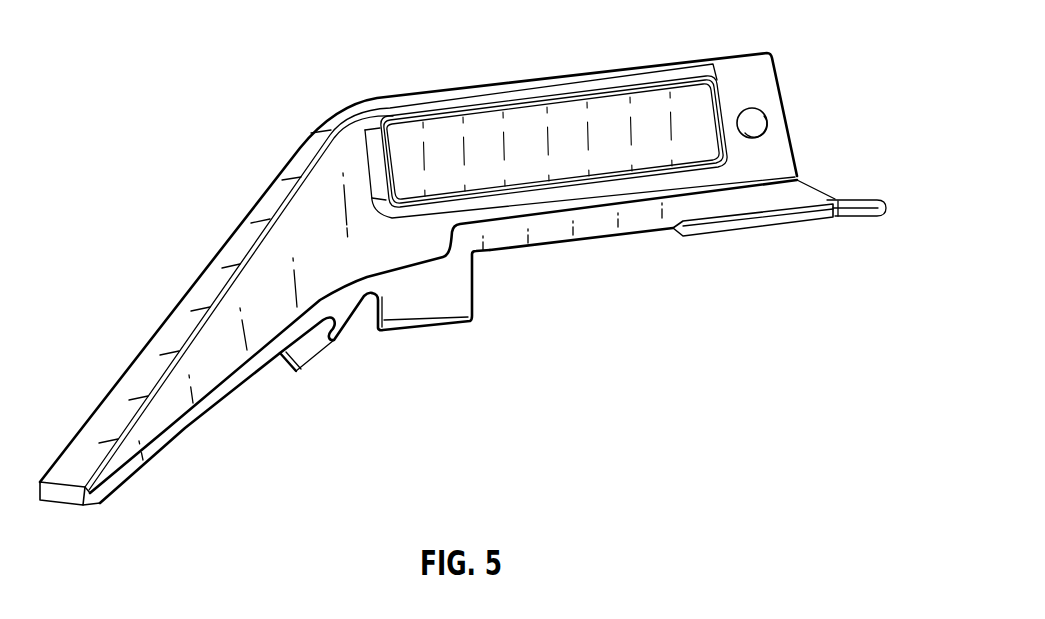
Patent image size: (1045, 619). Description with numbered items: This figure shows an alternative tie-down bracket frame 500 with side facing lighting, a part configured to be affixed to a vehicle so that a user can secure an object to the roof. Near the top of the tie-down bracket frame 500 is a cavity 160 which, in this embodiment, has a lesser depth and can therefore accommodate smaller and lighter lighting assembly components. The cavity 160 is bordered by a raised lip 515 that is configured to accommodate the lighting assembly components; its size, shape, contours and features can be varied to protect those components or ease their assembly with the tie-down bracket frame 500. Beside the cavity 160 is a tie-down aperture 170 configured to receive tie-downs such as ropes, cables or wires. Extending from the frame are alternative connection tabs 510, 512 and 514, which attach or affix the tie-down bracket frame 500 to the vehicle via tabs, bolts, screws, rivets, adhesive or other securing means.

The tie-down bracket frame 500 is at (160, 58).
The cavity 160 is at (628, 98).
The raised lip 515 is at (723, 97).
The tie-down aperture 170 is at (760, 121).
The connection tab 510 is at (850, 218).
The connection tab 512 is at (447, 323).
The connection tab 514 is at (312, 359).